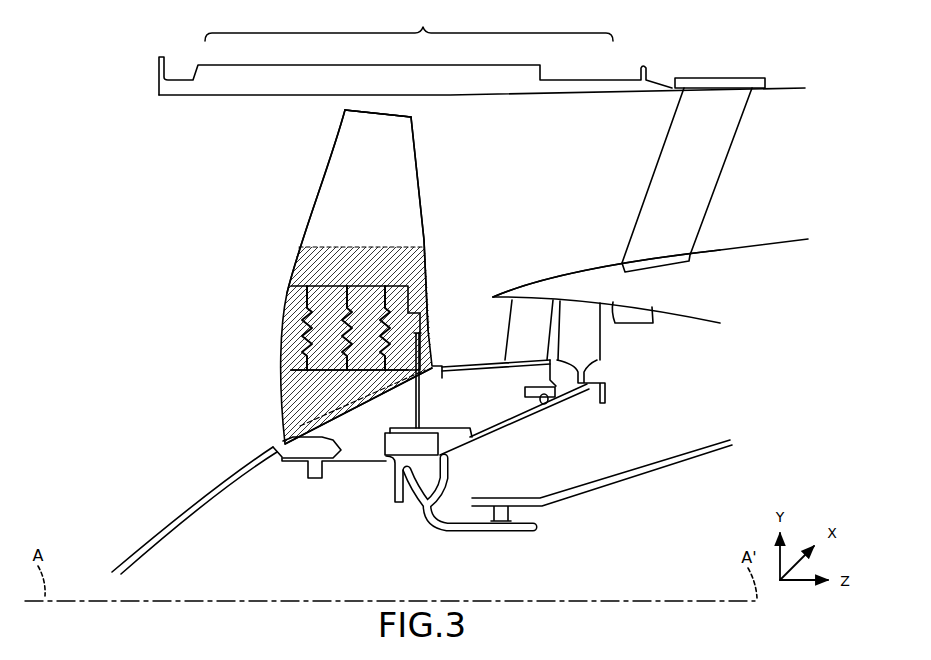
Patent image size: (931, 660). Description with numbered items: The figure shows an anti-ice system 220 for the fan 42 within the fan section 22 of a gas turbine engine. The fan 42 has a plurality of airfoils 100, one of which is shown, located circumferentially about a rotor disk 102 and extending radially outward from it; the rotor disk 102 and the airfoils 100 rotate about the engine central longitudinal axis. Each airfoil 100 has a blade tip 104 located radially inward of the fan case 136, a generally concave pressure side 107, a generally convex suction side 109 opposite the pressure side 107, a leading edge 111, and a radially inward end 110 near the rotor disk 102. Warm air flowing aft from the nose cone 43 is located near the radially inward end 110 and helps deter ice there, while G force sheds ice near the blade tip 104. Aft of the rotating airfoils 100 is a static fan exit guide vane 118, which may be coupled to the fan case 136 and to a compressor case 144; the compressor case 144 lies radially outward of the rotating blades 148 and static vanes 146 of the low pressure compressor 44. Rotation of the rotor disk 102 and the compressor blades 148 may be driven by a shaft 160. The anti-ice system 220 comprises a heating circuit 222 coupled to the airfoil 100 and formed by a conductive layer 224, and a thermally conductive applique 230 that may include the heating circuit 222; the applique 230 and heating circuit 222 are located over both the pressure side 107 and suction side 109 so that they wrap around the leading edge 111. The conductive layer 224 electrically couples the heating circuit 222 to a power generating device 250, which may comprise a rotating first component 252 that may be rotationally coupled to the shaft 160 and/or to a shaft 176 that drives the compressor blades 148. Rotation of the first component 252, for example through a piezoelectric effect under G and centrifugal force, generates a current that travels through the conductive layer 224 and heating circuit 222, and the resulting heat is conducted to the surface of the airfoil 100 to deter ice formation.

The fan section 22 is at (409, 23).
The fan case 136 is at (213, 82).
The fan exit guide vane 118 is at (710, 105).
The fan 42 is at (296, 193).
The nose cone 43 is at (157, 533).
The low pressure compressor 44 is at (532, 280).
The compressor case 144 is at (573, 284).
The static vanes 146 is at (518, 332).
The rotating blades 148 is at (569, 336).
The airfoil 100 is at (370, 170).
The blade tip 104 is at (387, 110).
The pressure side 107 is at (350, 183).
The suction side 109 is at (427, 162).
The radially inward end 110 is at (283, 417).
The leading edge 111 is at (280, 360).
The rotor disk 102 is at (333, 432).
The shaft 160 is at (428, 512).
The shaft 176 is at (483, 430).
The anti-ice system 220 is at (206, 256).
The heating circuit 222 is at (300, 303).
The conductive layer 224 is at (420, 297).
The thermally conductive applique 230 is at (307, 267).
The power generating device 250 is at (385, 460).
The first component 252 is at (418, 452).